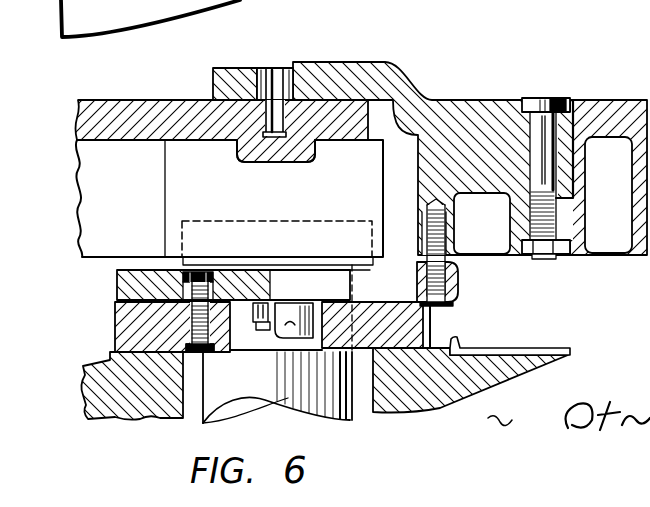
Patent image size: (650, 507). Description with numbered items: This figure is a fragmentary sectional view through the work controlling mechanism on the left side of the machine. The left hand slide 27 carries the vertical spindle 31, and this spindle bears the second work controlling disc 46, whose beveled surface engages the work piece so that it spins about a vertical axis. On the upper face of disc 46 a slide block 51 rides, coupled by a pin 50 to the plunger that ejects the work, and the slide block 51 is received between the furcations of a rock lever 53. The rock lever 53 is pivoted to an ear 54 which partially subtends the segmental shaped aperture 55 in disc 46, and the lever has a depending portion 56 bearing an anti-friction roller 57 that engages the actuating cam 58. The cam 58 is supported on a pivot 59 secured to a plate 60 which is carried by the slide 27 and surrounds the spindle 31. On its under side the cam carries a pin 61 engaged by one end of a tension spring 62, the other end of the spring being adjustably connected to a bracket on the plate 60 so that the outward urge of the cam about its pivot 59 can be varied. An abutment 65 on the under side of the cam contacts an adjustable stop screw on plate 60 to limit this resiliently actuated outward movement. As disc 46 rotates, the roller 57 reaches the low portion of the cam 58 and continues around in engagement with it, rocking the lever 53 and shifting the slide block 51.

The left hand slide 27 is at (131, 405).
The vertical spindle 31 is at (327, 402).
The work controlling disc 46 is at (645, 100).
The pin 50 is at (277, 52).
The slide block 51 is at (260, 67).
The rock lever 53 is at (478, 118).
The ear 54 is at (583, 256).
The segmental shaped aperture 55 is at (570, 100).
The depending portion 56 is at (460, 256).
The anti-friction roller 57 is at (458, 288).
The actuating cam 58 is at (433, 325).
The pivot 59 is at (229, 237).
The plate 60 is at (128, 321).
The pin 61 is at (270, 299).
The tension spring 62 is at (266, 331).
The abutment 65 is at (292, 328).